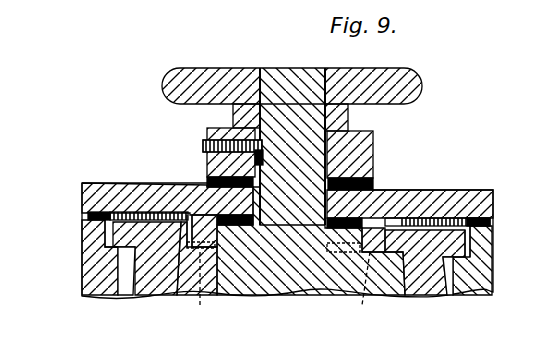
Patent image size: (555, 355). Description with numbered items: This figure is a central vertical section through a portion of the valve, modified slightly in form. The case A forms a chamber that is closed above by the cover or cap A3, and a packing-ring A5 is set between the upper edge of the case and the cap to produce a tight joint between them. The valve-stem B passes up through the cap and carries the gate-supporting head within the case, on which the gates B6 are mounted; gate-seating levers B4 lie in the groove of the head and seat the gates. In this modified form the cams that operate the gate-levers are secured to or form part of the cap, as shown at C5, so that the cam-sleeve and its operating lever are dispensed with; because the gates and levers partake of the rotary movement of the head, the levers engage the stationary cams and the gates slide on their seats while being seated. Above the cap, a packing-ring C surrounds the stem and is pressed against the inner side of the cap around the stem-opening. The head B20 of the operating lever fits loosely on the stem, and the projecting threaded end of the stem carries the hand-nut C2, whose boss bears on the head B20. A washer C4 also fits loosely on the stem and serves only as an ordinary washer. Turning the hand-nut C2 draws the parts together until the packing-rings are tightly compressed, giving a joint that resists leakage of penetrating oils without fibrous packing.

The case A is at (82, 259).
The cover or cap A3 is at (111, 190).
The packing-ring A5 is at (86, 213).
The valve-stem B is at (292, 78).
The gate-seating levers B4 is at (425, 294).
The gates B6 is at (469, 318).
The head B20 is at (368, 138).
The packing-ring C is at (360, 213).
The hand-nut C2 is at (422, 84).
The washer C4 is at (373, 184).
The cams C5 is at (283, 288).